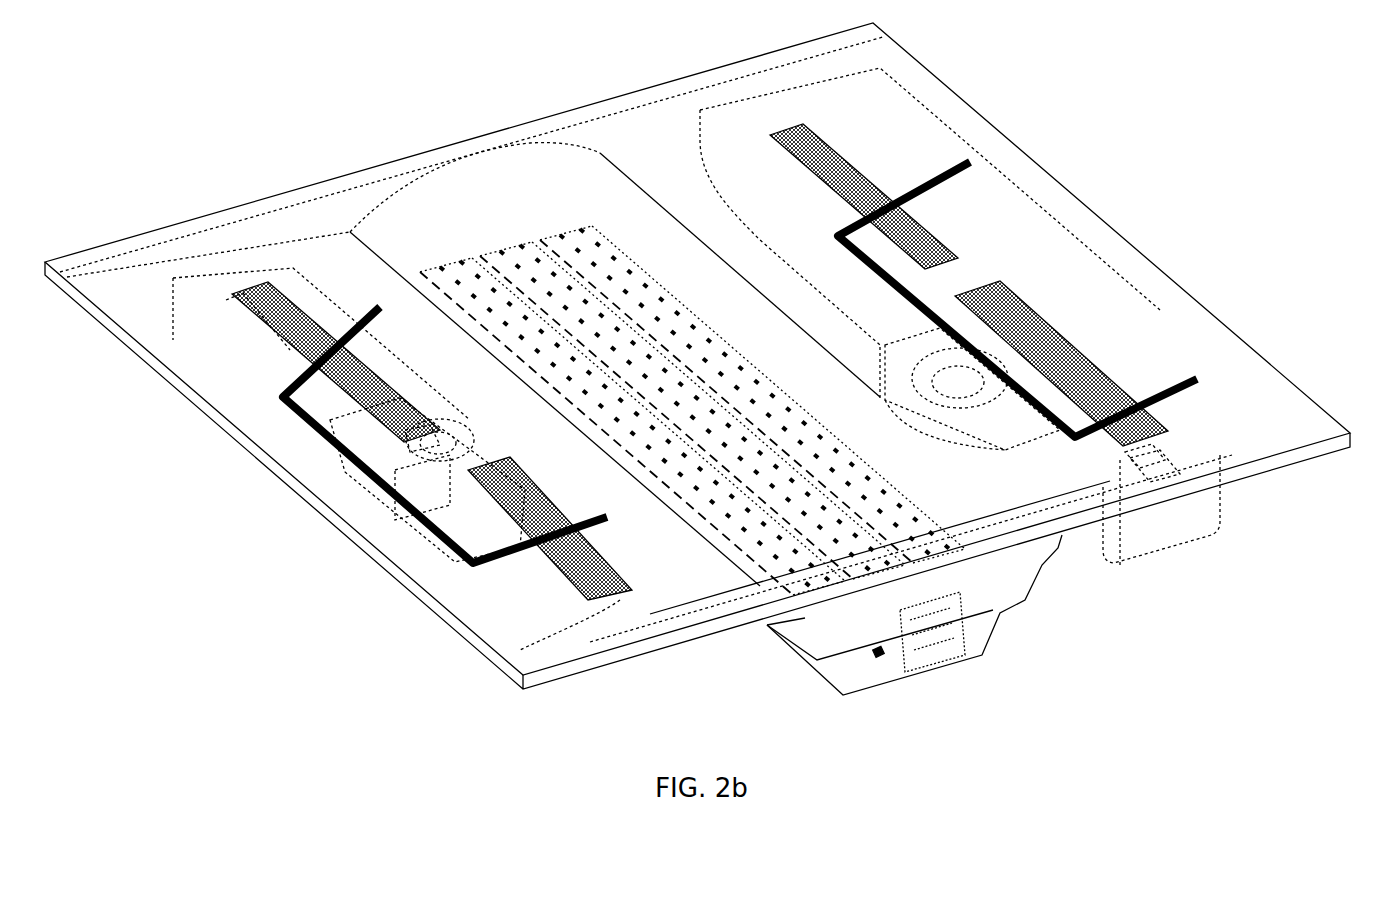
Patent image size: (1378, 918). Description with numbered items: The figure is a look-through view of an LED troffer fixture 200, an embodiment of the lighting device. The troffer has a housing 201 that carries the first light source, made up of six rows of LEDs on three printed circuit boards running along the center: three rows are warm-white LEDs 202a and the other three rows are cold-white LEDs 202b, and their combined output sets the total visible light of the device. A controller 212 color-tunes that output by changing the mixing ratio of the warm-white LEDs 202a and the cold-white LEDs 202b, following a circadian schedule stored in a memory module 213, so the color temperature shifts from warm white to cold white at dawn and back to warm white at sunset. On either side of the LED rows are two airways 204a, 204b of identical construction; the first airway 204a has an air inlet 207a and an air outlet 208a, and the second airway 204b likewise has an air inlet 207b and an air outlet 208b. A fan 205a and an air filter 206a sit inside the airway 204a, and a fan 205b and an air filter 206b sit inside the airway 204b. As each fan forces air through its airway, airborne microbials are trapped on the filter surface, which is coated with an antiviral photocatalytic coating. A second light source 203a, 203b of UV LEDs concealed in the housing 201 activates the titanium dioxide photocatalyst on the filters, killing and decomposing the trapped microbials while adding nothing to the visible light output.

The LED troffer fixture 200 is at (697, 356).
The housing 201 is at (487, 135).
The 2700K LEDs 202a is at (560, 247).
The 6500K LEDs 202b is at (557, 253).
The second light source 203a is at (1147, 465).
The second light source 203b is at (285, 345).
The airway 204a is at (1044, 299).
The airway 204b is at (469, 435).
The fan 205a is at (935, 405).
The fan 205b is at (444, 417).
The air filter 206a is at (1145, 445).
The air filter 206b is at (420, 443).
The air inlet 207a is at (1020, 310).
The air inlet 207b is at (252, 290).
The air outlet 208a is at (830, 145).
The air outlet 208b is at (580, 593).
The controller 212 is at (945, 650).
The memory module 213 is at (880, 656).